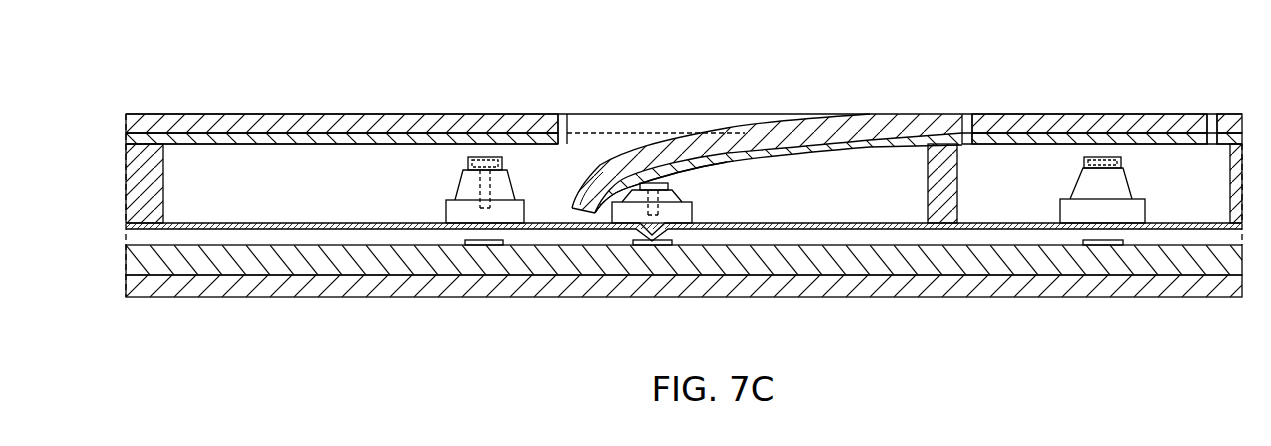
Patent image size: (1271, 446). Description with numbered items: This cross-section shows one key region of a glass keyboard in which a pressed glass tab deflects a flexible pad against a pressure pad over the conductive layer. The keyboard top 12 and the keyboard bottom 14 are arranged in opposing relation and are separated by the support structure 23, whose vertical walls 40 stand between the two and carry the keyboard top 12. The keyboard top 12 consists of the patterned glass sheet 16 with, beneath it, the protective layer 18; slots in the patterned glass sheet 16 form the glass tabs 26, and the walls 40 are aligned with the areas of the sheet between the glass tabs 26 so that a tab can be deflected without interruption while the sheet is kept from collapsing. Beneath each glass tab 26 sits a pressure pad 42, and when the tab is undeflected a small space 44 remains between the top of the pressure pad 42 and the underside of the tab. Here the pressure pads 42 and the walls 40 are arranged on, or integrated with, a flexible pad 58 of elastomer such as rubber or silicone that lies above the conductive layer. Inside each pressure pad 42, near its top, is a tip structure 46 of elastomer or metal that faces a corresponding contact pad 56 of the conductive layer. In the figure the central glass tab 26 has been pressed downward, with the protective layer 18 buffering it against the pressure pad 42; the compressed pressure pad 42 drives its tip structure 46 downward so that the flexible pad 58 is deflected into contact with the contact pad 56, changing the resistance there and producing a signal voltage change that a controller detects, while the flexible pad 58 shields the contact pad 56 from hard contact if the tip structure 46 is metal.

The keyboard top 12 is at (649, 137).
The keyboard bottom 14 is at (120, 222).
The patterned glass sheet 16 is at (248, 114).
The protective layer 18 is at (838, 145).
The support structure 23 is at (122, 183).
The glass tab 26 is at (355, 120).
The vertical wall 40 is at (148, 213).
The pressure pad 42 is at (457, 188).
The space 44 is at (482, 156).
The tip structure 46 is at (490, 190).
The contact pad 56 is at (480, 246).
The flexible pad 58 is at (837, 222).